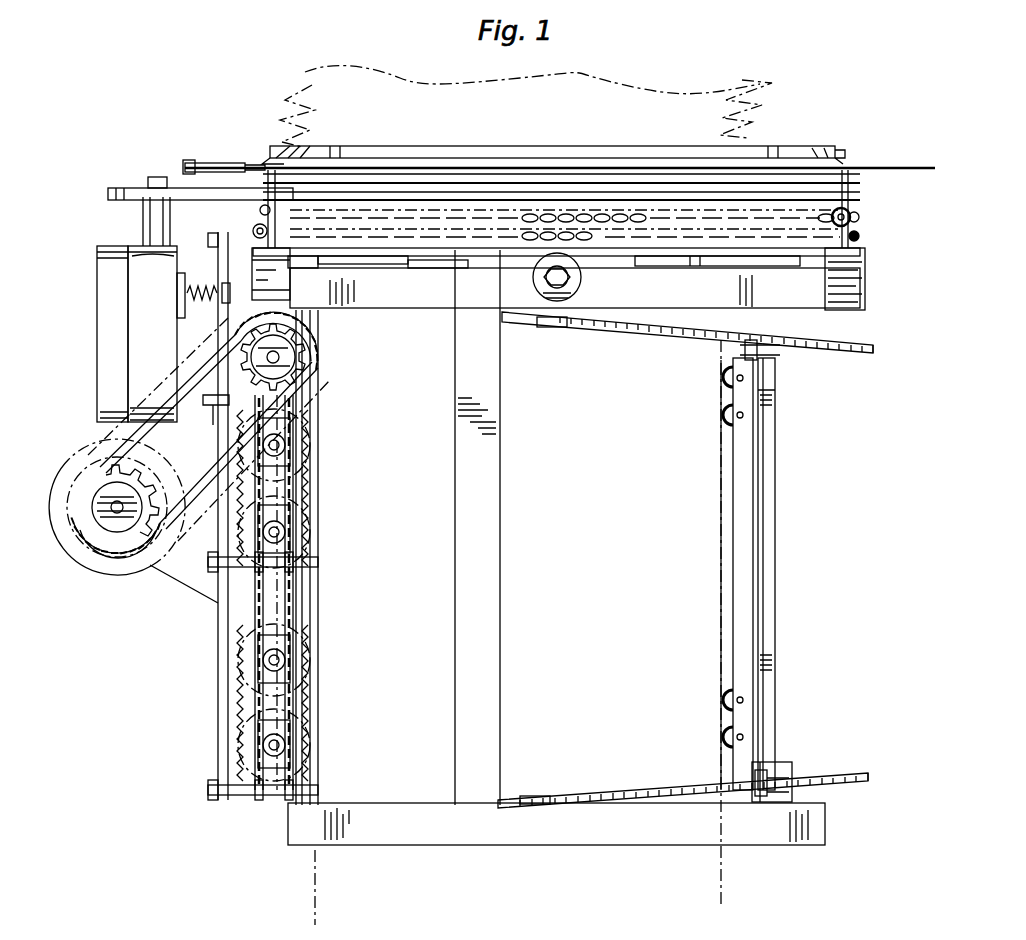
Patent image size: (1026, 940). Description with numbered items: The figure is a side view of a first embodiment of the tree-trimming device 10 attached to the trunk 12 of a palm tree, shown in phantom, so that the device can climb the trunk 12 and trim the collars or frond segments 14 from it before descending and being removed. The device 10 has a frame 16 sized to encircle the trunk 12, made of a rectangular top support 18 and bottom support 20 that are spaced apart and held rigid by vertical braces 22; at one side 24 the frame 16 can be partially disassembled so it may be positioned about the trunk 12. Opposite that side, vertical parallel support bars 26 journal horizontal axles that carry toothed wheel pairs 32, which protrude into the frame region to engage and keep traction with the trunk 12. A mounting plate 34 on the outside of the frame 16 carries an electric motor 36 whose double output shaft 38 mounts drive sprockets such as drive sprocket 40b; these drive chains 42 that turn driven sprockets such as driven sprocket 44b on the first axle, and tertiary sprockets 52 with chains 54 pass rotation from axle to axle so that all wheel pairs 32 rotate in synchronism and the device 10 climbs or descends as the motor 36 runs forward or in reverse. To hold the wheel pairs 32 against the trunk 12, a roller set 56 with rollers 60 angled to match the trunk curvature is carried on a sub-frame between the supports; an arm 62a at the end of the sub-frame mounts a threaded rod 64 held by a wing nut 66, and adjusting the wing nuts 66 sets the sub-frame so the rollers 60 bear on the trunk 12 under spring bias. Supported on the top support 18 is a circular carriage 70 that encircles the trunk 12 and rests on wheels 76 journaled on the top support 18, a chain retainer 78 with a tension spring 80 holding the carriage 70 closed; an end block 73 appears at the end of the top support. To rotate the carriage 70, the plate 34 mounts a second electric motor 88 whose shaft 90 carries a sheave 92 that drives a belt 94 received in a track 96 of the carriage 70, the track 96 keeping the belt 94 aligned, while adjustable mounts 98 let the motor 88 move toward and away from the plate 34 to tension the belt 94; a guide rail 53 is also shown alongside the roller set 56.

The device 10 is at (478, 856).
The trunk 12 is at (391, 92).
The collars 14 is at (280, 85).
The frame 16 is at (386, 797).
The top support 18 is at (391, 310).
The bottom support 20 is at (644, 842).
The braces 22 is at (500, 479).
The side 24 is at (790, 522).
The support bars 26 is at (300, 591).
The toothed wheel pairs 32 is at (332, 462).
The mounting plate 34 is at (216, 702).
The electric motor 36 is at (136, 577).
The double output shaft 38 is at (115, 514).
The drive sprocket 40b is at (200, 435).
The drive chains 42 is at (158, 521).
The driven sprocket 44b is at (300, 363).
The tertiary sprockets 52 is at (288, 462).
The guide rail 53 is at (758, 546).
The chains 54 is at (290, 634).
The roller set 56 is at (740, 612).
The rollers 60 is at (718, 729).
The arm 62a is at (745, 348).
The threaded rods 64 is at (636, 331).
The wing nuts 66 is at (783, 350).
The circular carriage 70 is at (848, 152).
The end block 73 is at (860, 308).
The wheels 76 is at (336, 287).
The chain retainer 78 is at (859, 210).
The tension spring 80 is at (252, 233).
The electric motor 88 is at (98, 290).
The shaft 90 is at (145, 218).
The sheave 92 is at (136, 170).
The belt 94 is at (232, 150).
The track 96 is at (852, 183).
The adjustable mounts 98 is at (200, 284).